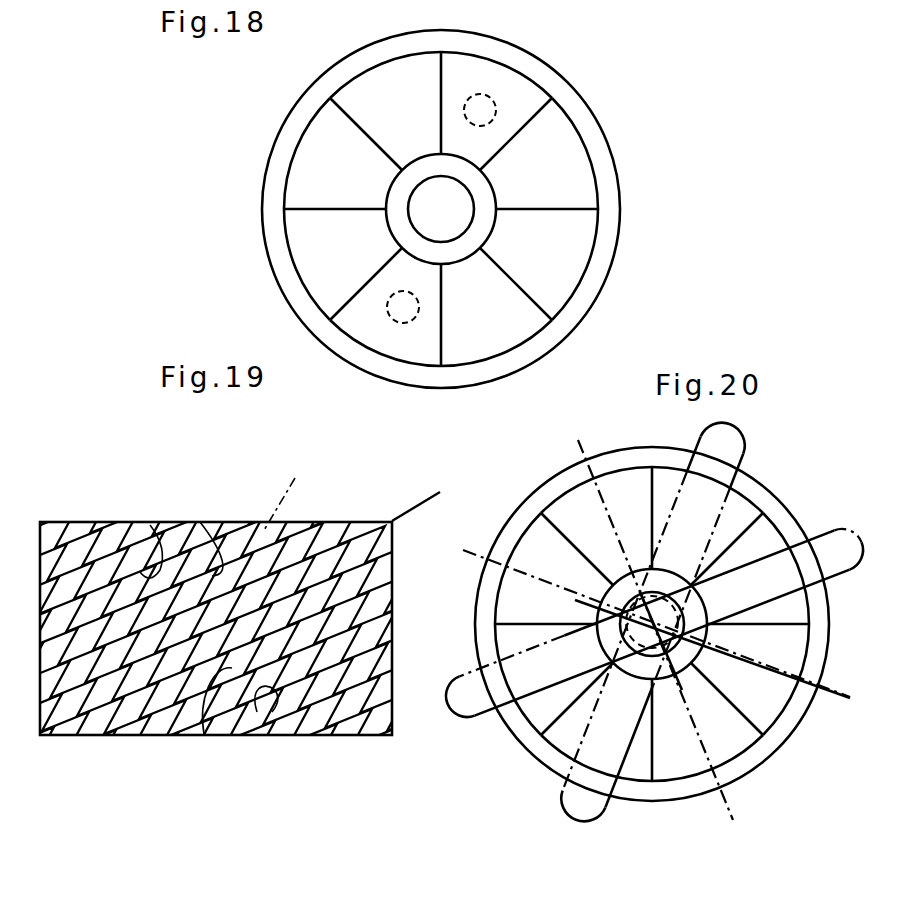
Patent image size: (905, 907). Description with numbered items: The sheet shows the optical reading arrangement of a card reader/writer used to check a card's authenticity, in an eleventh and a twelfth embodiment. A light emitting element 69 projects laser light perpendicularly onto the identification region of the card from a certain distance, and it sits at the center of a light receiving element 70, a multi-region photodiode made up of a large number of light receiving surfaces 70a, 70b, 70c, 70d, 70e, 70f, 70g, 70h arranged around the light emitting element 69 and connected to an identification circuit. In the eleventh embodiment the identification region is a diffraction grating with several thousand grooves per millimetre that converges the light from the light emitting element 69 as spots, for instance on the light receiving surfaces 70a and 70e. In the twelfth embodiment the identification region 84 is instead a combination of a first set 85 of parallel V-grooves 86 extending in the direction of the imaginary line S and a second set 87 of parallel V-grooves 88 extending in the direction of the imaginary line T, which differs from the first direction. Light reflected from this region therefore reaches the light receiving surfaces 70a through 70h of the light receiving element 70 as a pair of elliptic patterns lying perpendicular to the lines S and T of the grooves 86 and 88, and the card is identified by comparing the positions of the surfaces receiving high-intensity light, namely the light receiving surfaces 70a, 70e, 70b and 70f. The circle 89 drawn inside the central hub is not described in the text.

In FIG. 18, the light emitting element 69 is at (467, 205).
In FIG. 18, the light receiving element 70 is at (578, 124).
In FIG. 20, the light receiving element 70 is at (782, 527).
In FIG. 18, the light receiving surface 70a is at (528, 92).
In FIG. 20, the light receiving surface 70a is at (750, 515).
In FIG. 18, the light receiving surface 70b is at (583, 190).
In FIG. 20, the light receiving surface 70b is at (803, 610).
In FIG. 18, the light receiving surface 70c is at (557, 305).
In FIG. 20, the light receiving surface 70c is at (767, 717).
In FIG. 18, the light receiving surface 70d is at (480, 348).
In FIG. 20, the light receiving surface 70d is at (677, 767).
In FIG. 18, the light receiving surface 70e is at (368, 333).
In FIG. 20, the light receiving surface 70e is at (635, 770).
In FIG. 18, the light receiving surface 70f is at (293, 222).
In FIG. 20, the light receiving surface 70f is at (538, 718).
In FIG. 18, the light receiving surface 70g is at (318, 135).
In FIG. 20, the light receiving surface 70g is at (500, 611).
In FIG. 18, the light receiving surface 70h is at (392, 72).
In FIG. 20, the light receiving surface 70h is at (550, 507).
In FIG. 19, the identification region 84 is at (312, 518).
In FIG. 19, the first set of parallel V-grooves 85 is at (235, 800).
In FIG. 19, the V-groove 86 is at (195, 708).
In FIG. 19, the second set of parallel V-grooves 87 is at (212, 456).
In FIG. 19, the V-groove 88 is at (150, 525).
In FIG. 20, the tool path circle 89 is at (642, 593).
In FIG. 19, the imaginary line T is at (277, 517).
In FIG. 20, the imaginary line T is at (583, 448).
In FIG. 19, the imaginary line S is at (405, 505).
In FIG. 20, the imaginary line S is at (483, 548).